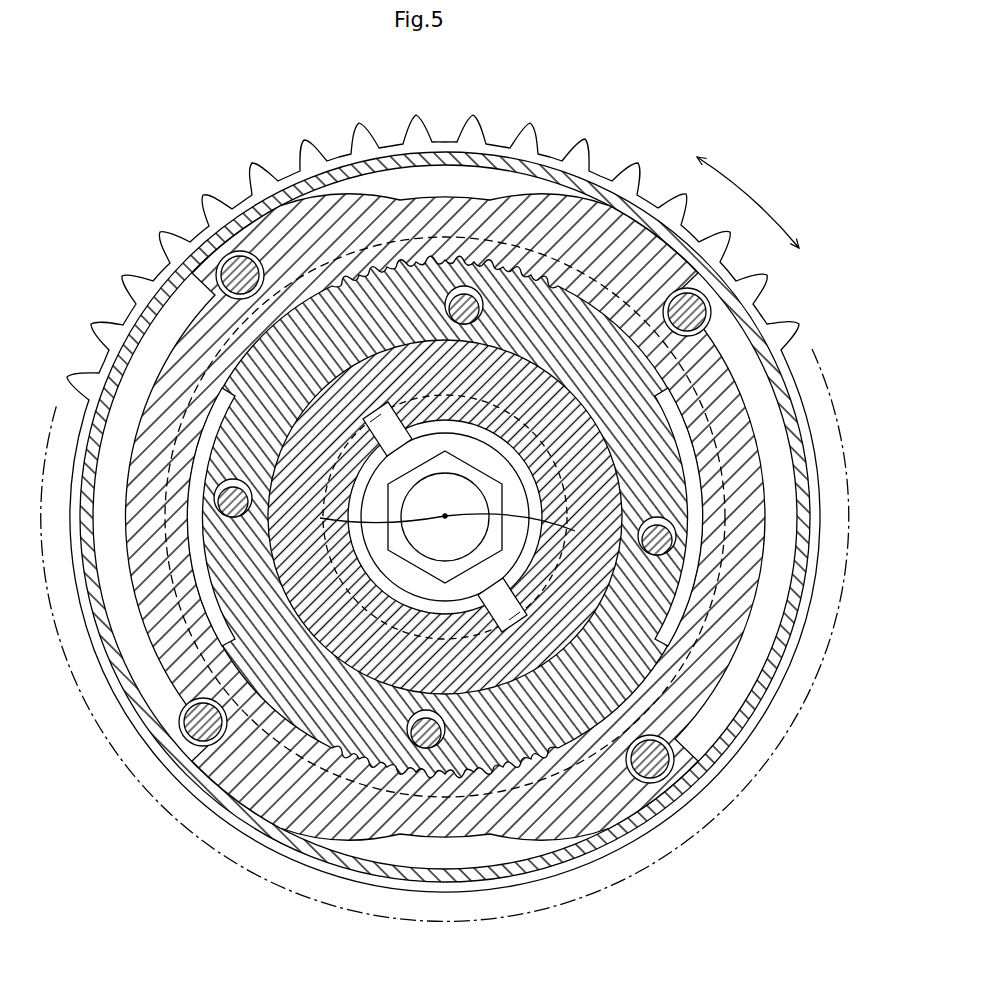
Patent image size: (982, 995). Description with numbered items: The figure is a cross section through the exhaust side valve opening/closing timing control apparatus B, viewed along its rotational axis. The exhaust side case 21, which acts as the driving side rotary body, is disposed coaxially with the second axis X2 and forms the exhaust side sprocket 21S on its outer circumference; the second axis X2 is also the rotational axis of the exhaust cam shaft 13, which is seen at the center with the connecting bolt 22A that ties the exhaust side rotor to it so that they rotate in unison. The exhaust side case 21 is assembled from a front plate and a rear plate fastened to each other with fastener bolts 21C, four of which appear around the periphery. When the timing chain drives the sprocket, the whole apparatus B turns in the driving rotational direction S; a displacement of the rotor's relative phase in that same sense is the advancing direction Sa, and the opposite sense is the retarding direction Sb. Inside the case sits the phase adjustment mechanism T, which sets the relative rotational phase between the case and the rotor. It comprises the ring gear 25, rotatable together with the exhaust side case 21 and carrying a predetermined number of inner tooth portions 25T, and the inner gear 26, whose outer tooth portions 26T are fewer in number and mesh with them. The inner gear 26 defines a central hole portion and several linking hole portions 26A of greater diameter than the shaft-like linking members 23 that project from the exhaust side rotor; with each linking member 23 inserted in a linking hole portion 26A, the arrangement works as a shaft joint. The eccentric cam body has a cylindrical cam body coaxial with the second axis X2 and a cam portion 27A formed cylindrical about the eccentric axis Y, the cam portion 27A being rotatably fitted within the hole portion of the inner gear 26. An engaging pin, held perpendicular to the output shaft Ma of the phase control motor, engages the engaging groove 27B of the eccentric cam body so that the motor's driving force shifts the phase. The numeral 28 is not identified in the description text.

The exhaust side valve opening/closing timing control apparatus B is at (250, 147).
The exhaust cam shaft 13 is at (578, 608).
The exhaust side case 21 is at (140, 323).
The exhaust side sprocket 21S is at (388, 133).
The fastener bolts 21C is at (222, 258).
The connecting bolt 22A is at (472, 470).
The linking members 23 is at (475, 303).
The ring gear 25 is at (337, 752).
The inner tooth portions 25T is at (353, 778).
The inner gear 26 is at (573, 748).
The linking hole portions 26A is at (450, 302).
The outer tooth portions 26T is at (417, 772).
The cam portion 27A is at (300, 728).
The engaging groove 27B is at (381, 417).
The collar 28 is at (441, 420).
The phase adjustment mechanism T is at (381, 784).
The output shaft Ma is at (304, 519).
The second axis X2 is at (463, 529).
The eccentric axis Y is at (443, 513).
The driving rotational direction S is at (745, 189).
The advancing direction Sa is at (809, 261).
The retarding direction Sb is at (679, 145).